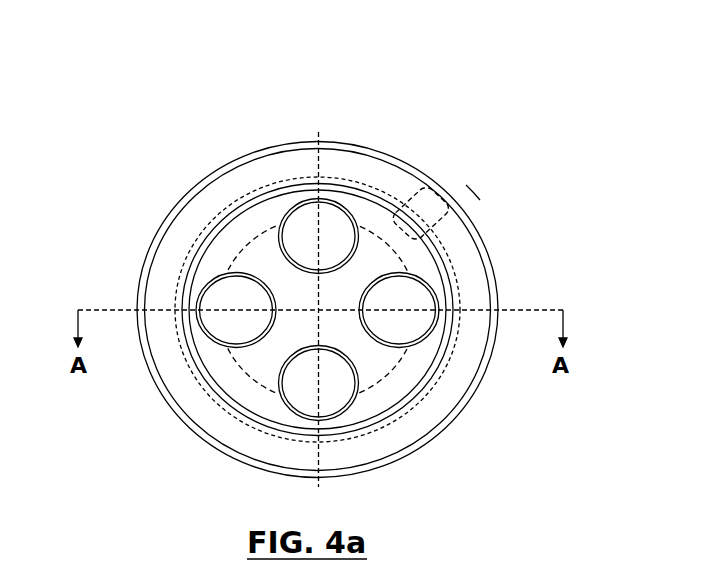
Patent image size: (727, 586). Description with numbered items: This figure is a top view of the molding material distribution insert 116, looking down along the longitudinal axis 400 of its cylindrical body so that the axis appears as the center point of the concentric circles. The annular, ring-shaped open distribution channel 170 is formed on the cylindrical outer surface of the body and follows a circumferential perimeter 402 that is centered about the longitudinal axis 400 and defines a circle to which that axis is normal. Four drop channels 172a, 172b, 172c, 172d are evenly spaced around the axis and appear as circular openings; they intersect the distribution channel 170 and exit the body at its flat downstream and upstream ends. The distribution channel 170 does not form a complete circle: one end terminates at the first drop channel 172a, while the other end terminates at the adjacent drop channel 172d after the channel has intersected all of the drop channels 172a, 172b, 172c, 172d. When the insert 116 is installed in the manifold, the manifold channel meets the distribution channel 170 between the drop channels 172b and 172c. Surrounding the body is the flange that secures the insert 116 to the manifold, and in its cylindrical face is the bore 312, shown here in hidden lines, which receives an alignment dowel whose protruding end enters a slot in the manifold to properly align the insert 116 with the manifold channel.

The molding material distribution insert 116 is at (566, 105).
The distribution channel 170 is at (233, 227).
The drop channel 172a is at (425, 296).
The drop channel 172b is at (335, 402).
The drop channel 172c is at (218, 325).
The drop channel 172d is at (300, 217).
The bore 312 is at (458, 190).
The longitudinal axis 400 is at (380, 263).
The circumferential perimeter 402 is at (142, 265).